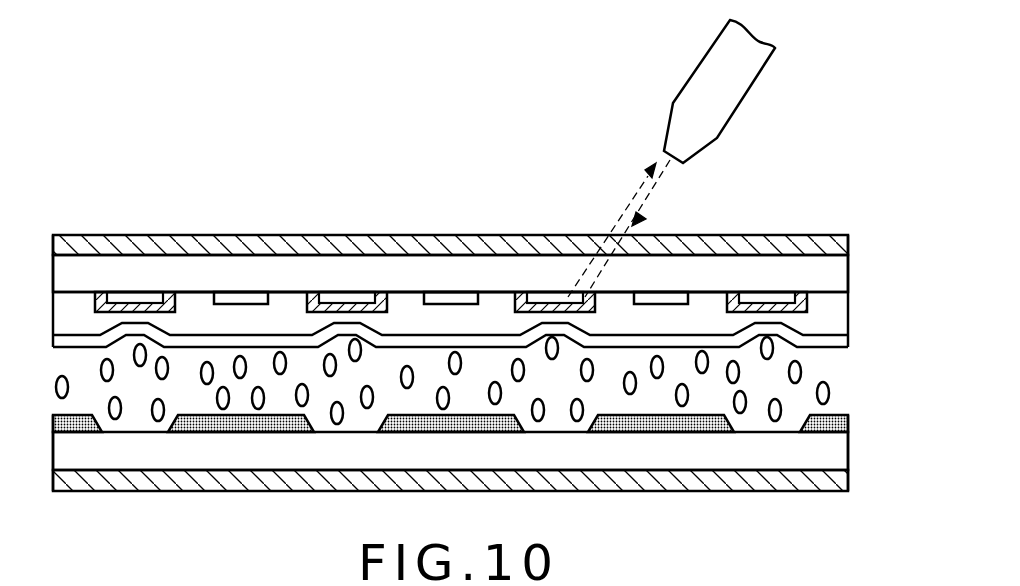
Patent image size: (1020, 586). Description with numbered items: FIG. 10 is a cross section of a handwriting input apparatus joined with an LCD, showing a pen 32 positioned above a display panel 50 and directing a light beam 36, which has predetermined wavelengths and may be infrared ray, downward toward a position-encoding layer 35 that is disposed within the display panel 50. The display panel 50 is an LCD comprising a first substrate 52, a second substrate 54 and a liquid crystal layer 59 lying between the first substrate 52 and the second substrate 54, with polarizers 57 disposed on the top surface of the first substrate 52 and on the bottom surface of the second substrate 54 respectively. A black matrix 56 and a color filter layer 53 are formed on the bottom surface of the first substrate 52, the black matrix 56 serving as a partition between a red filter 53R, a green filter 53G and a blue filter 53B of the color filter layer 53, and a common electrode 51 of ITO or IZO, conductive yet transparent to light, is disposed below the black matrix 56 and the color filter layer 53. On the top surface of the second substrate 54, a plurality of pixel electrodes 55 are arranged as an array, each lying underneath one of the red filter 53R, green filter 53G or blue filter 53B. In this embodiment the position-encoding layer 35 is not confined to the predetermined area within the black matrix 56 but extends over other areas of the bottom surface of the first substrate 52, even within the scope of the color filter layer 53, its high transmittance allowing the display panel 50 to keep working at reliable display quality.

The display panel 50 is at (118, 175).
The pen 32 is at (703, 101).
The light beam 36 is at (657, 190).
The position-encoding layer 35 is at (137, 298).
The black matrix 56 is at (802, 296).
The polarizers 57 is at (848, 245).
The first substrate 52 is at (848, 275).
The color filter layer 53 is at (848, 318).
The red filter 53R is at (219, 331).
The green filter 53G is at (429, 331).
The blue filter 53B is at (639, 331).
The common electrode 51 is at (848, 344).
The liquid crystal layer 59 is at (828, 372).
The pixel electrodes 55 is at (848, 426).
The second substrate 54 is at (848, 453).